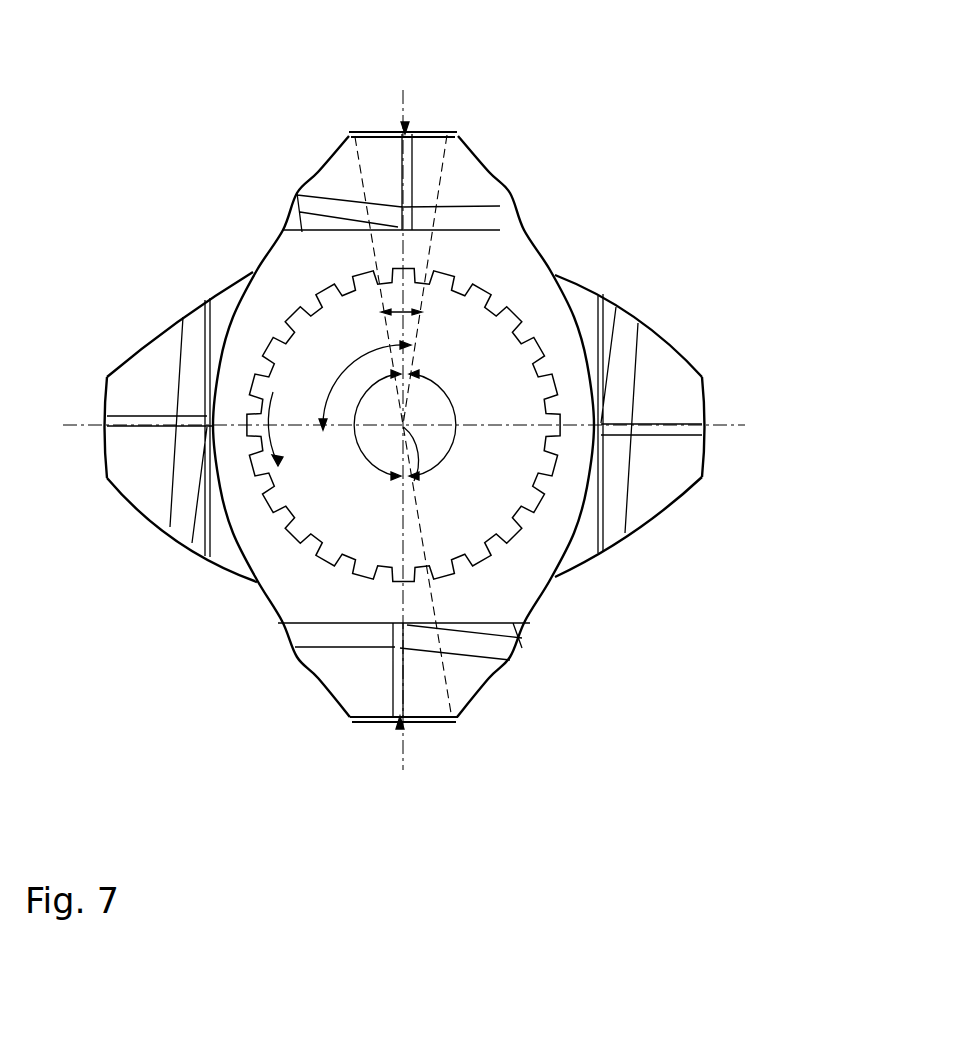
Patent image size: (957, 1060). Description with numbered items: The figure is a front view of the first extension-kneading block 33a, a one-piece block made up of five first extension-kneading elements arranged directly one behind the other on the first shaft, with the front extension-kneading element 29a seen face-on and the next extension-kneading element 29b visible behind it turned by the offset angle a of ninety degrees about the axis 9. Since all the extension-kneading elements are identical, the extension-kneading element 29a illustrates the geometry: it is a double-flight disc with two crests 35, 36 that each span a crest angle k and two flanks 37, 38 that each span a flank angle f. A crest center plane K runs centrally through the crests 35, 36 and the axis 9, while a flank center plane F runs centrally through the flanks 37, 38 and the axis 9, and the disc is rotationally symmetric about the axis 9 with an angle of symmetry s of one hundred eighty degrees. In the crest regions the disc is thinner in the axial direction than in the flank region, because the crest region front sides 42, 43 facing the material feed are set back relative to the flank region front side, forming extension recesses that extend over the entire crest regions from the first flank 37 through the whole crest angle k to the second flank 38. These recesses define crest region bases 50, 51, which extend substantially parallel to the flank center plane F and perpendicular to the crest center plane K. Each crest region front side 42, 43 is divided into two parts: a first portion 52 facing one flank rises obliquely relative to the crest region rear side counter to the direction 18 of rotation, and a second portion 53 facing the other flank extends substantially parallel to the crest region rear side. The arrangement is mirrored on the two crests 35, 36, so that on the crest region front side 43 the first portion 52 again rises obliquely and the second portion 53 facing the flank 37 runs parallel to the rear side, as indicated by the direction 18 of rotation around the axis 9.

The axis 9 is at (405, 472).
The direction of rotation 18 is at (255, 416).
The first extension-kneading element 29a is at (556, 251).
The first extension-kneading element 29b is at (707, 397).
The first extension-kneading block 33a is at (698, 423).
The crest 35 is at (387, 123).
The crest 36 is at (418, 727).
The flank 37 is at (258, 249).
The flank 38 is at (540, 242).
The crest region front side 42 is at (406, 121).
The crest region front side 43 is at (400, 733).
The crest region base 50 is at (297, 193).
The crest region base 51 is at (515, 652).
The first portion 52 is at (338, 163).
The second portion 53 is at (460, 157).
The flank center plane F is at (720, 425).
The crest center plane K is at (390, 256).
The crest angle k is at (403, 424).
The offset angle a is at (365, 385).
The flank angle f is at (440, 425).
The angle of symmetry s is at (370, 425).